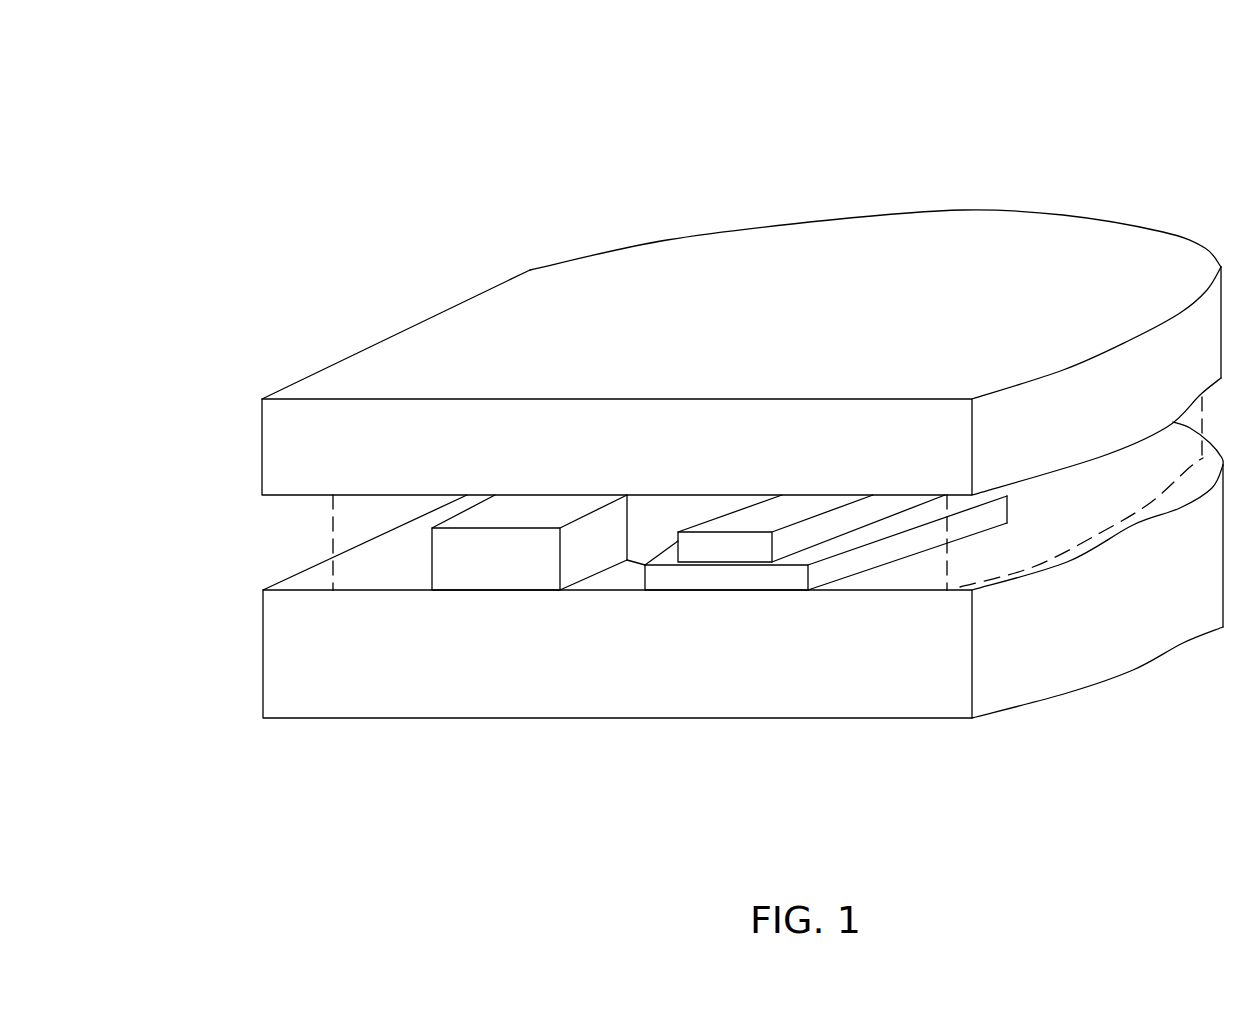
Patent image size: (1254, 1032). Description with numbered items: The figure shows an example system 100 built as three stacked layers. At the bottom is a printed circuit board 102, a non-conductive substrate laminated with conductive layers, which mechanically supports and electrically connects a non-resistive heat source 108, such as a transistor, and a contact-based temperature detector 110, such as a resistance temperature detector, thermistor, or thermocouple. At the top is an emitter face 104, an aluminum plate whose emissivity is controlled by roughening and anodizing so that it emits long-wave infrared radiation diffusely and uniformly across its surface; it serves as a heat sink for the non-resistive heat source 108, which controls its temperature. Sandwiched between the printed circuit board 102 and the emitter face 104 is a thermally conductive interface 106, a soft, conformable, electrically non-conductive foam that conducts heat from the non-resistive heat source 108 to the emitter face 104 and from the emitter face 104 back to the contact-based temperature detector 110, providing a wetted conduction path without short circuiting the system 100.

The system 100 is at (113, 46).
The printed circuit board 102 is at (599, 669).
The emitter face 104 is at (706, 361).
The thermally conductive interface 106 is at (333, 541).
The non-resistive heat source 108 is at (707, 559).
The contact-based temperature detector 110 is at (478, 574).